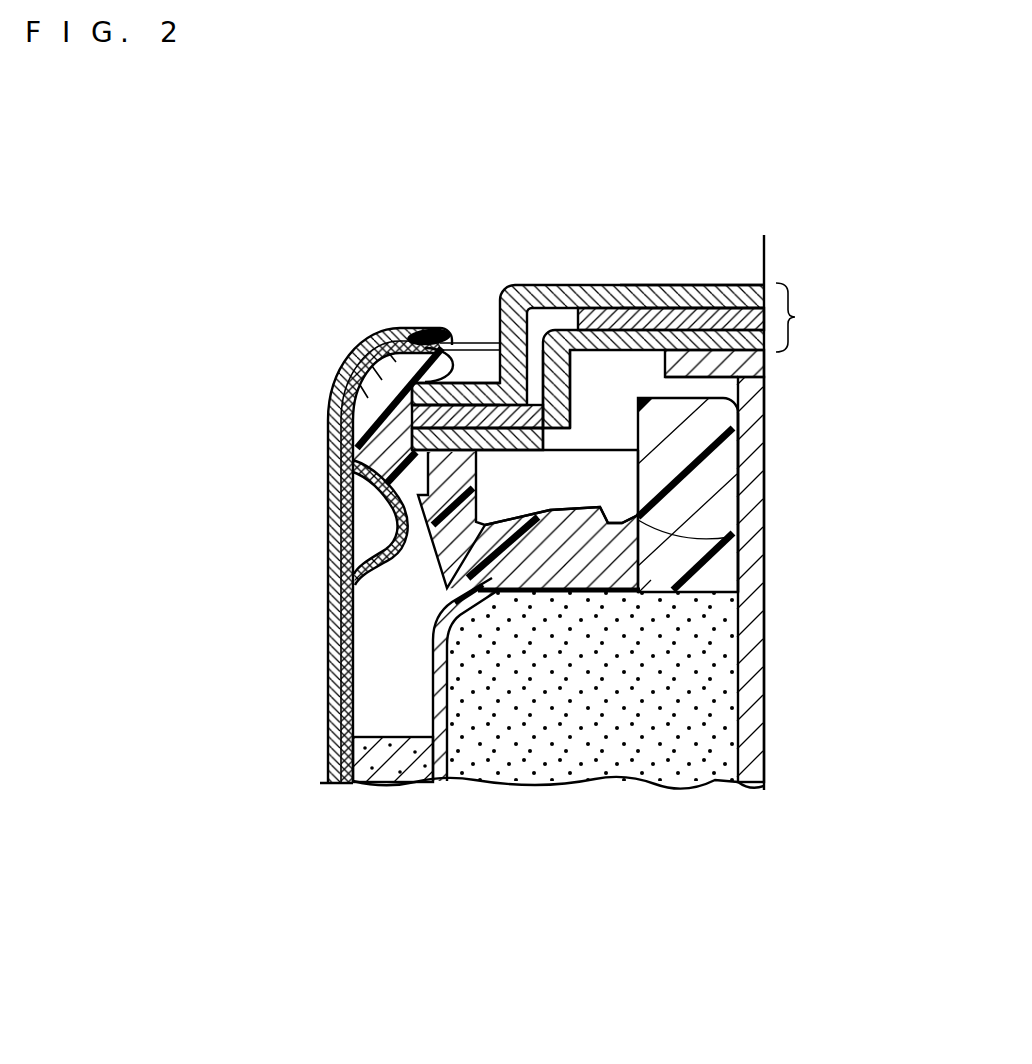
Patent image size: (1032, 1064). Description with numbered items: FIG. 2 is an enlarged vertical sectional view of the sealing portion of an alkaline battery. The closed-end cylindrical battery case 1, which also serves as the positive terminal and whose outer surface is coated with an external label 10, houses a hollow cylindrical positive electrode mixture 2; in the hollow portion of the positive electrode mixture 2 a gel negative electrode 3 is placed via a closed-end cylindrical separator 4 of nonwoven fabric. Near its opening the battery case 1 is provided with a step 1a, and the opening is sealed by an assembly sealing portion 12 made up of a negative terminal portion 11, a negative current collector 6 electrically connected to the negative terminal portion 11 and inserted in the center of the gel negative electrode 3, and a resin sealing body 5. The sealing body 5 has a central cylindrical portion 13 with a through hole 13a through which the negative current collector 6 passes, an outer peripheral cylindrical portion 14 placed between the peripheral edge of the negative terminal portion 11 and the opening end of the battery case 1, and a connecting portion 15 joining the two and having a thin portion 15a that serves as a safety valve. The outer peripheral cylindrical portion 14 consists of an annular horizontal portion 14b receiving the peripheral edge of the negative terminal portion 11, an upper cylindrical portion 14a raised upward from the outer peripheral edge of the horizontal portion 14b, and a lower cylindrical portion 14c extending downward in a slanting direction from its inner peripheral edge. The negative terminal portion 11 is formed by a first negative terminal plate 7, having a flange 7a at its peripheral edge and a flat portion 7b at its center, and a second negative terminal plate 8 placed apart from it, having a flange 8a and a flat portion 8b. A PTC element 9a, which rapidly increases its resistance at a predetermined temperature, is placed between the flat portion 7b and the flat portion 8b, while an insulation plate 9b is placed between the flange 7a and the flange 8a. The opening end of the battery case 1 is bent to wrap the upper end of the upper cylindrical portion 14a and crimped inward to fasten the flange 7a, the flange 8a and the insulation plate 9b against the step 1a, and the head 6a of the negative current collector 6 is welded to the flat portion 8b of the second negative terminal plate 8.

The battery case 1 is at (330, 628).
The step 1a is at (357, 528).
The positive electrode mixture 2 is at (392, 790).
The gel negative electrode 3 is at (588, 728).
The separator 4 is at (435, 688).
The sealing body 5 is at (712, 578).
The negative current collector 6 is at (745, 742).
The head 6a is at (770, 354).
The first negative terminal plate 7 is at (595, 285).
The flange 7a is at (463, 395).
The flat portion 7b is at (675, 300).
The second negative terminal plate 8 is at (637, 340).
The flange 8a is at (509, 450).
The flat portion 8b is at (617, 343).
The PTC element 9a is at (720, 300).
The insulation plate 9b is at (410, 327).
The external label 10 is at (338, 445).
The negative terminal portion 11 is at (808, 317).
The assembly sealing portion 12 is at (750, 376).
The central cylindrical portion 13 is at (712, 484).
The through hole 13a is at (745, 436).
The outer peripheral cylindrical portion 14 is at (385, 345).
The upper cylindrical portion 14a is at (338, 385).
The horizontal portion 14b is at (378, 465).
The lower cylindrical portion 14c is at (429, 540).
The connecting portion 15 is at (548, 533).
The thin portion 15a is at (673, 560).